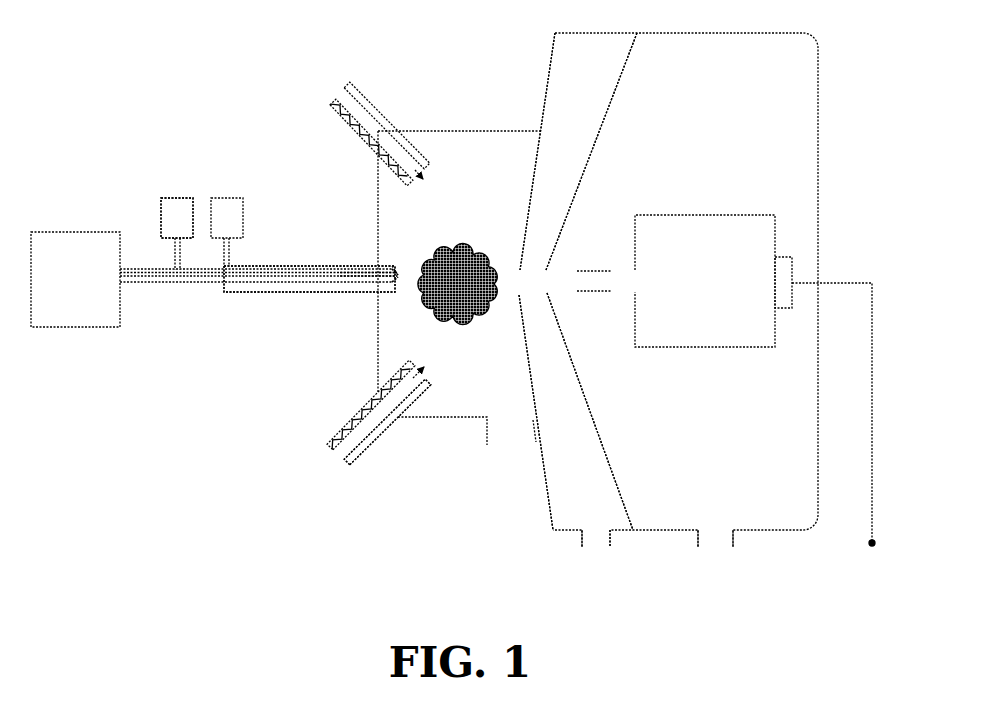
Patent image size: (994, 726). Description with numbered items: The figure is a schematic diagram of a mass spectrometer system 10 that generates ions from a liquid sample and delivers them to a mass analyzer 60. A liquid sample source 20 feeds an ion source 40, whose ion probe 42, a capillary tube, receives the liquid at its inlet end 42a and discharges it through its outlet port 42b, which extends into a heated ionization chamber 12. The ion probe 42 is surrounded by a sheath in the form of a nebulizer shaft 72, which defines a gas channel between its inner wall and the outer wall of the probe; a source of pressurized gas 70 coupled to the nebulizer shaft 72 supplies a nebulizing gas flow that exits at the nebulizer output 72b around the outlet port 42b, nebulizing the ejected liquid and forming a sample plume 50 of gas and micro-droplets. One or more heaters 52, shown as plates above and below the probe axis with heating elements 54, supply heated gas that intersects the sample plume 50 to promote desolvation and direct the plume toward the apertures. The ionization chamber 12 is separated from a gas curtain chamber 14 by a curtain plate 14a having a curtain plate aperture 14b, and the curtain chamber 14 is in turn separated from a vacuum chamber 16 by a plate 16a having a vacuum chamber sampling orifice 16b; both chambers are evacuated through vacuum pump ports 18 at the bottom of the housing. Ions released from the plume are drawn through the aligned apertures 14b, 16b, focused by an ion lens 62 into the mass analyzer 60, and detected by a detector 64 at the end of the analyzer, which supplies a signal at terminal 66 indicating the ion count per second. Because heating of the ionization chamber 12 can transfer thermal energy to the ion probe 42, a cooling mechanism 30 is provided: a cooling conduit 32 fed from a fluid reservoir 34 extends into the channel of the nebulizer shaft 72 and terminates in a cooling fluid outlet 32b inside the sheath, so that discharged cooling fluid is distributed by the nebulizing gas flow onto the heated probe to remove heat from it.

The mass spectrometer system 10 is at (166, 86).
The ionization chamber 12 is at (459, 288).
The gas curtain chamber 14 is at (558, 281).
The curtain plate 14a is at (550, 85).
The curtain plate aperture 14b is at (516, 291).
The vacuum chamber 16 is at (682, 290).
The vacuum chamber plate 16a is at (607, 112).
The vacuum chamber sampling orifice 16b is at (556, 289).
The vacuum pump ports 18 is at (594, 546).
The liquid sample source 20 is at (75, 279).
The cooling mechanism 30 is at (159, 212).
The cooling conduit 32 is at (295, 272).
The cooling fluid outlet 32b is at (323, 275).
The fluid reservoir 34 is at (177, 234).
The ion source 40 is at (276, 314).
The ion probe 42 is at (161, 284).
The inlet end 42a is at (128, 290).
The outlet port 42b is at (396, 284).
The sample plume 50 is at (457, 283).
The heaters 52 is at (355, 84).
The heating elements 54 is at (387, 424).
The mass analyzer 60 is at (705, 281).
The ion lens 62 is at (585, 265).
The detector 64 is at (793, 262).
The terminal 66 is at (872, 547).
The source of pressurized gas 70 is at (227, 232).
The nebulizer shaft 72 is at (272, 268).
The nebulizer output 72b is at (396, 277).